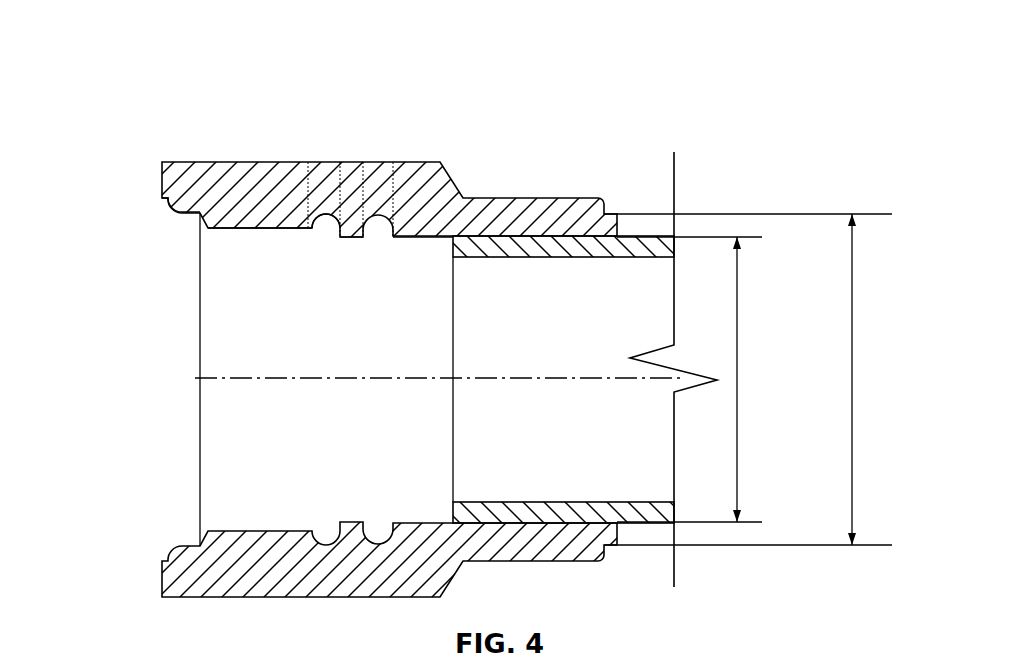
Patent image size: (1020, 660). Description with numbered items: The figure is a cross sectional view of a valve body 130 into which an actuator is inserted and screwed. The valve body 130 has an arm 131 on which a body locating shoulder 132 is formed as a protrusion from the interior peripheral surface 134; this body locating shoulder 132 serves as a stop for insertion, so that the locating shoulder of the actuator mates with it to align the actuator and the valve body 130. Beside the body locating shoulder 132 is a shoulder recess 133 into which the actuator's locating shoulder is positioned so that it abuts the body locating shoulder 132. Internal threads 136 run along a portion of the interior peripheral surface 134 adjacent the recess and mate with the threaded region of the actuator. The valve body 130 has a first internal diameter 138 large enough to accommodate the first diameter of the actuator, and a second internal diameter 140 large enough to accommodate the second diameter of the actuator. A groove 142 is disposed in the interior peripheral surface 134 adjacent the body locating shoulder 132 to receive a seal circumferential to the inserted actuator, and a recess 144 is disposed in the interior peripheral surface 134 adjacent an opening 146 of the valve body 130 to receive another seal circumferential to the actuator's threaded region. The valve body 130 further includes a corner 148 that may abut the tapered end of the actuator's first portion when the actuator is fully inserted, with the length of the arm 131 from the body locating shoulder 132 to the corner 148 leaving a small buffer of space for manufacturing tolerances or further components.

The valve body 130 is at (348, 55).
The arm 131 is at (342, 163).
The body locating shoulder 132 is at (335, 240).
The shoulder recess 133 is at (322, 230).
The interior peripheral surface 134 is at (437, 242).
The internal threads 136 is at (235, 230).
The first internal diameter 138 is at (737, 380).
The second internal diameter 140 is at (852, 380).
The groove 142 is at (393, 200).
The recess 144 is at (158, 200).
The opening 146 is at (148, 367).
The corner 148 is at (458, 228).